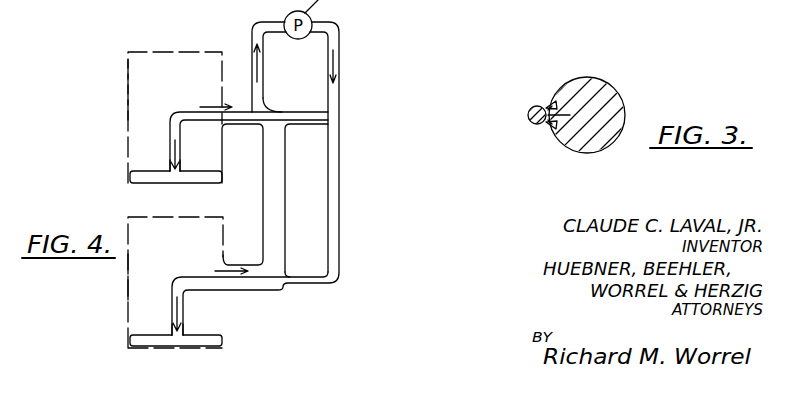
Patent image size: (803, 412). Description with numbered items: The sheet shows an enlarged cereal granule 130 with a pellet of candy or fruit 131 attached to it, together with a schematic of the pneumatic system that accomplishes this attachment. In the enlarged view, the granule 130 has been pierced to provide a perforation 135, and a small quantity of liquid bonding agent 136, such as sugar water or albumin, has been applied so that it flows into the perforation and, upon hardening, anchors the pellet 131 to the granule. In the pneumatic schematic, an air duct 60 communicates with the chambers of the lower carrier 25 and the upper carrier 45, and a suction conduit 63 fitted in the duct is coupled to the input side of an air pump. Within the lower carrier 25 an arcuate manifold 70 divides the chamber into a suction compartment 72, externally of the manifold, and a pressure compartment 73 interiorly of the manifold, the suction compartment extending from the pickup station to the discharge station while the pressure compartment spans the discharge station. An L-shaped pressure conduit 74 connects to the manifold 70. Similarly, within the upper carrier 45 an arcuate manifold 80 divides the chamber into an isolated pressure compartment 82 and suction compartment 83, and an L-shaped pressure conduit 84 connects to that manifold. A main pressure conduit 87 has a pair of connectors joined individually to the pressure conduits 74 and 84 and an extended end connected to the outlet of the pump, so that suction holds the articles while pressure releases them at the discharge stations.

In FIG. 4, the lower carrier 25 is at (144, 207).
In FIG. 4, the upper carrier 45 is at (180, 43).
In FIG. 4, the air duct 60 is at (278, 182).
In FIG. 4, the suction conduit 63 is at (263, 66).
In FIG. 4, the arcuate manifold 70 is at (157, 335).
In FIG. 4, the suction compartment 72 is at (143, 282).
In FIG. 4, the pressure compartment 73 is at (195, 342).
In FIG. 4, the pressure conduit 74 is at (185, 282).
In FIG. 4, the arcuate manifold 80 is at (165, 170).
In FIG. 4, the pressure compartment 82 is at (200, 176).
In FIG. 4, the suction compartment 83 is at (137, 85).
In FIG. 4, the pressure conduit 84 is at (190, 112).
In FIG. 4, the main pressure conduit 87 is at (339, 174).
In FIG. 3, the cereal granules 130 is at (614, 93).
In FIG. 3, the pellets of candy or fruit 131 is at (528, 113).
In FIG. 3, the perforation 135 is at (556, 104).
In FIG. 3, the liquid bonding agent 136 is at (553, 128).